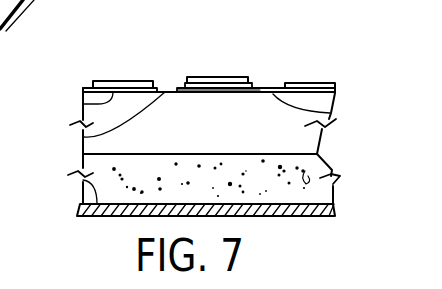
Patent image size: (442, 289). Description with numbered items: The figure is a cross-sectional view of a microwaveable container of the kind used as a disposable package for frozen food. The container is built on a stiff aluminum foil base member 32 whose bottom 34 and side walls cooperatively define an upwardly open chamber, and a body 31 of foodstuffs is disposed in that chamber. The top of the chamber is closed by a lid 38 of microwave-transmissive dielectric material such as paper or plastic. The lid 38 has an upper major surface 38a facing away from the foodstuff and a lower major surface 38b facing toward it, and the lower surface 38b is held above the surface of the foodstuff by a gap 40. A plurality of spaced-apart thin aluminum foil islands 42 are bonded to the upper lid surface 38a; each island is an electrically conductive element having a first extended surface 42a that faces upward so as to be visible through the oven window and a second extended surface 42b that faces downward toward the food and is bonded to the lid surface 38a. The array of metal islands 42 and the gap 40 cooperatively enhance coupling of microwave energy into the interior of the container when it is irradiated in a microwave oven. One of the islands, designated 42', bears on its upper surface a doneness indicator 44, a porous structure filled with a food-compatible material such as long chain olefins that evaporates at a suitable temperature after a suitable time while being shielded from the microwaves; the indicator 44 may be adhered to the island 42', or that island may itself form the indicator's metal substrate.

The body of foodstuffs 31 is at (201, 185).
The foil base member 32 is at (335, 200).
The bottom 34 is at (82, 187).
The lid 38 is at (330, 113).
The upper major surface 38a is at (170, 88).
The lower major surface 38b is at (84, 137).
The gap 40 is at (213, 131).
The metal foil islands 42 is at (204, 63).
The first extended surface 42a is at (152, 88).
The designated metal island 42' is at (218, 65).
The second extended surface 42b is at (83, 100).
The doneness indicator 44 is at (232, 78).